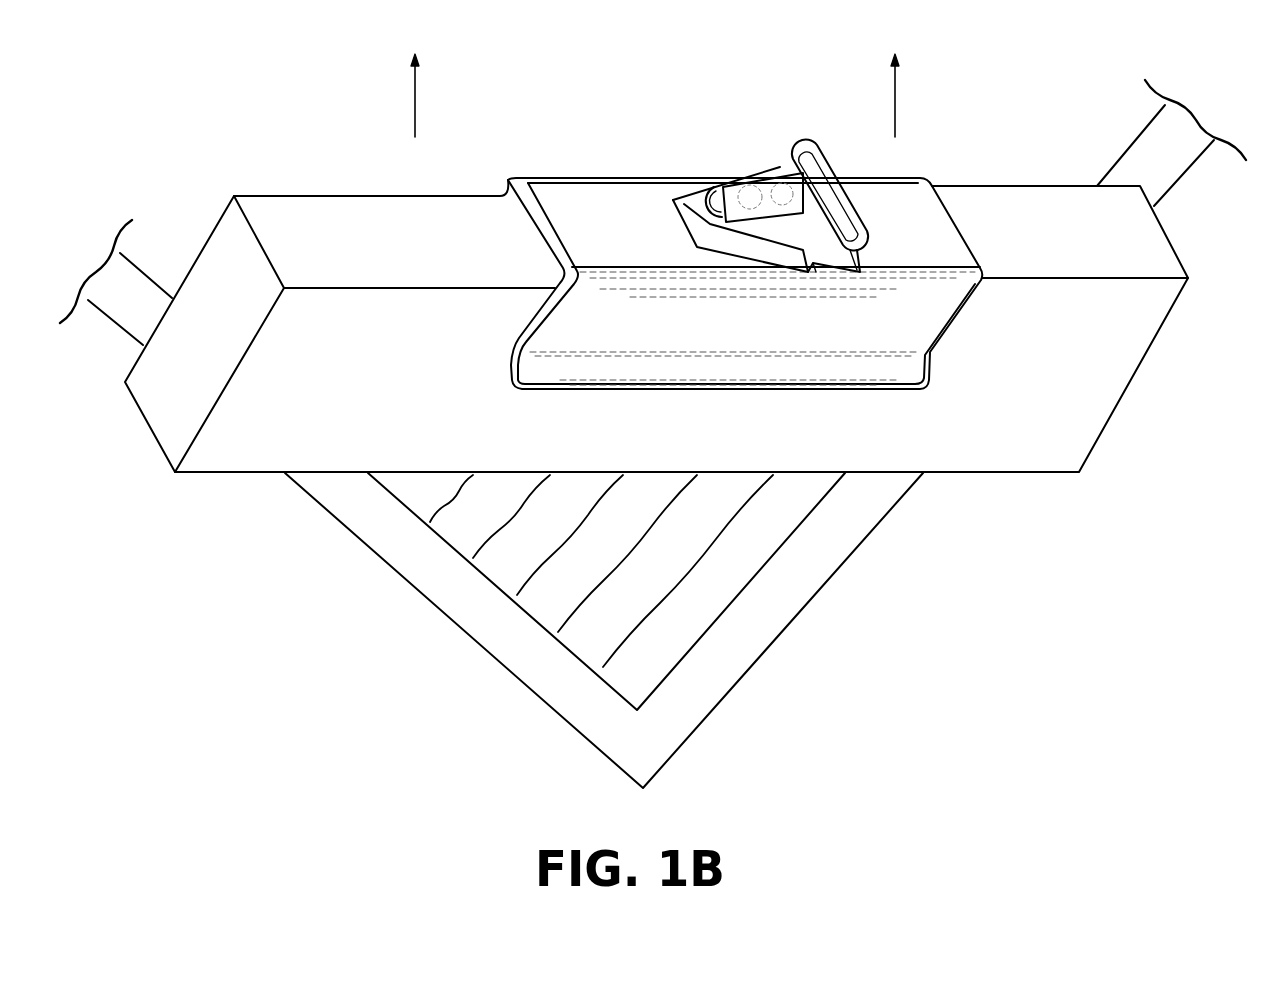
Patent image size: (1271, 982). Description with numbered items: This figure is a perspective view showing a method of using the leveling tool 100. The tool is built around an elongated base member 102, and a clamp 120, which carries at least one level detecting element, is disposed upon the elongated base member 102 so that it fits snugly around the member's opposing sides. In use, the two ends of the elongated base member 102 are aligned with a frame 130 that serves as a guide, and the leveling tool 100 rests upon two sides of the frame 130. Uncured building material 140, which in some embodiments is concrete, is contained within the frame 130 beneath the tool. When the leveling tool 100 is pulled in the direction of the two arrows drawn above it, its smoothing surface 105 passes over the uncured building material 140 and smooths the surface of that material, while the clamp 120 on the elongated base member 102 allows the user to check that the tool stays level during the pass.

The leveling tool 100 is at (1029, 98).
The elongated base member 102 is at (322, 230).
The smoothing surface 105 is at (237, 475).
The clamp 120 is at (510, 397).
The frame 130 is at (857, 545).
The uncured building material 140 is at (673, 568).